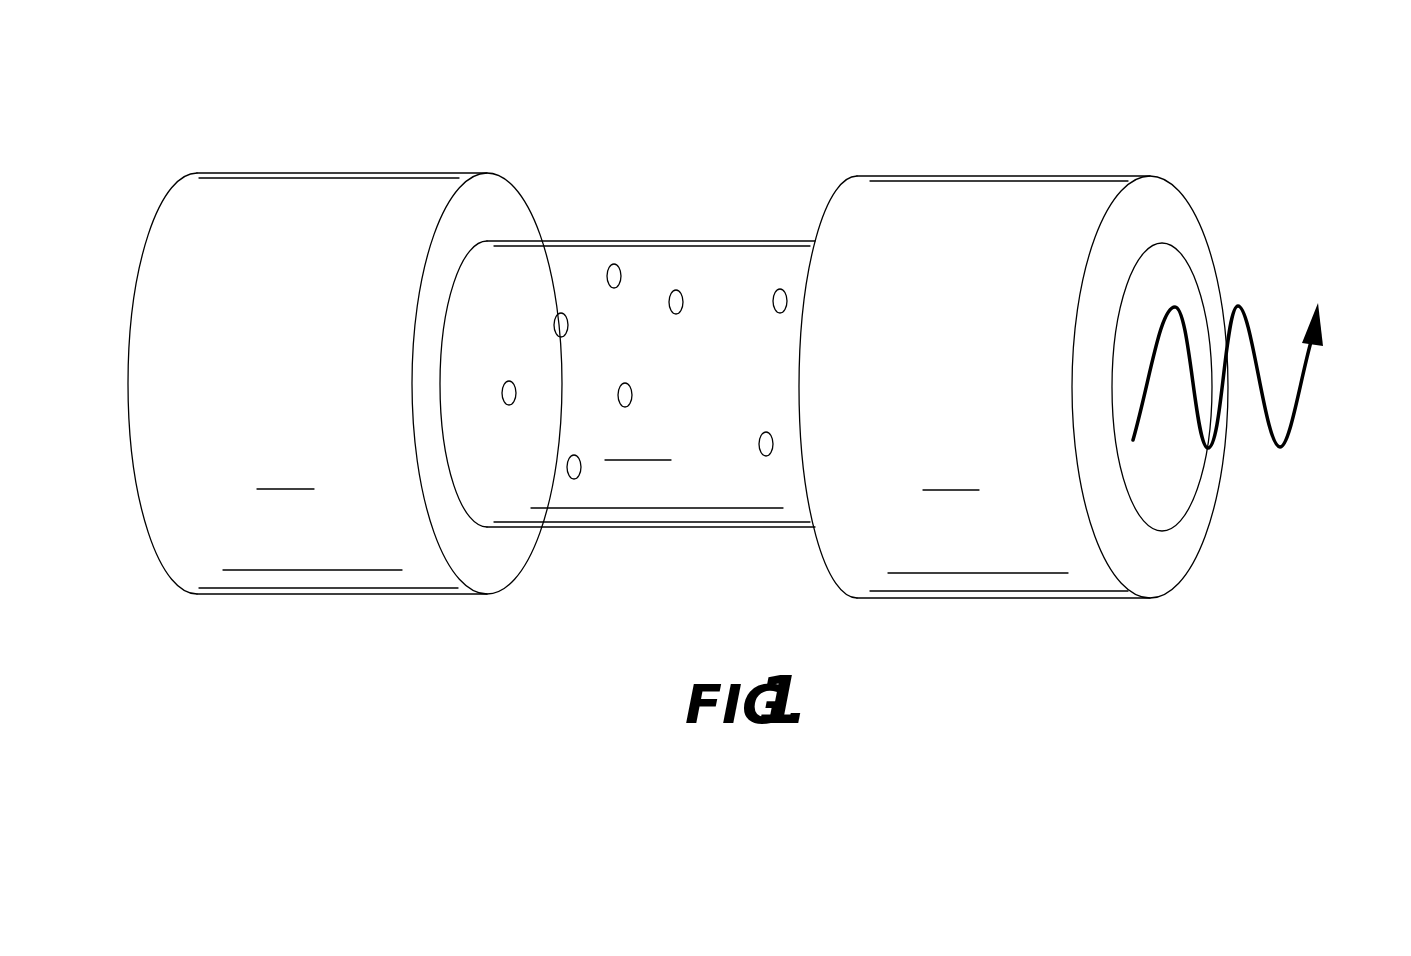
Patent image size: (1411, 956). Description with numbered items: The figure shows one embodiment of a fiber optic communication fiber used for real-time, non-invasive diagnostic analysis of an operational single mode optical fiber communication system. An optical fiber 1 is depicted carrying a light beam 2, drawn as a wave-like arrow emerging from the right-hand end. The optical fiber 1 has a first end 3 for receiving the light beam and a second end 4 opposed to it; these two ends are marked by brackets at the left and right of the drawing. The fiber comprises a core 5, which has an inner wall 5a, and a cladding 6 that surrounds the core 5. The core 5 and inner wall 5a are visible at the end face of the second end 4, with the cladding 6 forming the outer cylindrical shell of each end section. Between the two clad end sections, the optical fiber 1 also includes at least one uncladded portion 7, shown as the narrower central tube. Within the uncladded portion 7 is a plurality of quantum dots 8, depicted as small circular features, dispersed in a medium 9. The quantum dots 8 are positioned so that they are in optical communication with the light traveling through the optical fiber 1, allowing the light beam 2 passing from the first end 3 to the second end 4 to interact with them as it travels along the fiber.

The optical fiber 1 is at (1180, 114).
The light beam 2 is at (1277, 450).
The first end 3 is at (128, 220).
The second end 4 is at (1328, 223).
The core 5 is at (1185, 289).
The inner wall 5a is at (1186, 254).
The cladding 6 is at (343, 555).
The uncladded portion 7 is at (661, 568).
The quantum dots 8 is at (609, 265).
The medium 9 is at (724, 303).